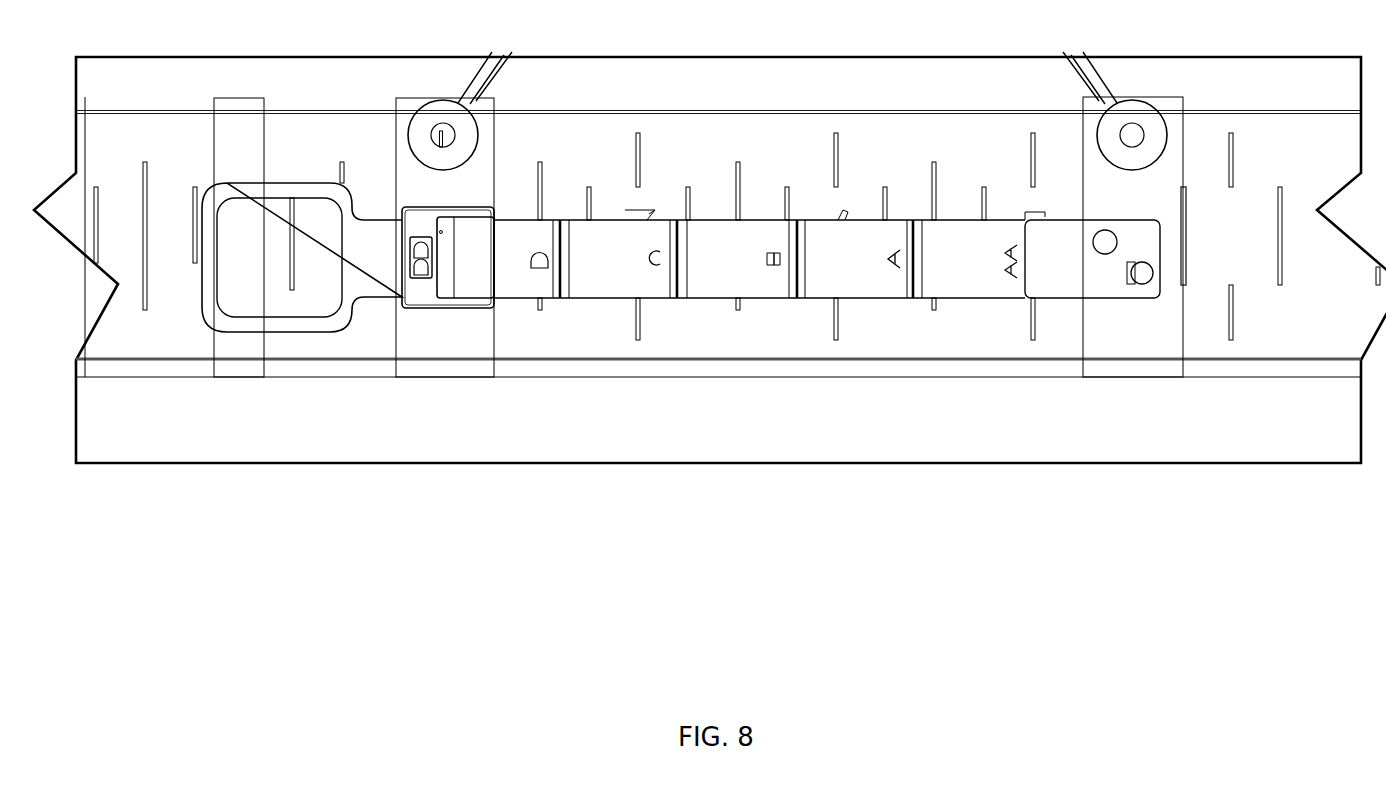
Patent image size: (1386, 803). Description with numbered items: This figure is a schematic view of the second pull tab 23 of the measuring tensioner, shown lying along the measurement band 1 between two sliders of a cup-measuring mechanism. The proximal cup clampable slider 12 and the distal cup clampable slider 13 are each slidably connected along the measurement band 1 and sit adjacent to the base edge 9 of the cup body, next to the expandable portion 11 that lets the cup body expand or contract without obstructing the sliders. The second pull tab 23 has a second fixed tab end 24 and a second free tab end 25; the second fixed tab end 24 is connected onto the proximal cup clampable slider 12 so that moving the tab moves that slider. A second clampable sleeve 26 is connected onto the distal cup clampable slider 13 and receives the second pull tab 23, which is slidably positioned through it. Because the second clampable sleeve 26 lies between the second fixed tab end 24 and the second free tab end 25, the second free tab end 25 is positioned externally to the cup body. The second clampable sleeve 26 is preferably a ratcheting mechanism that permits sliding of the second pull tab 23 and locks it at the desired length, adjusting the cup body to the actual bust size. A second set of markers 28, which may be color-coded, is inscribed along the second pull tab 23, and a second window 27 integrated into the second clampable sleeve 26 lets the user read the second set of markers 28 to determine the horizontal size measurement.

The measurement band 1 is at (827, 343).
The base edge 9 is at (460, 395).
The expandable portion 11 is at (763, 69).
The proximal cup clampable slider 12 is at (1148, 372).
The distal cup clampable slider 13 is at (247, 365).
The second pull tab 23 is at (851, 228).
The second fixed tab end 24 is at (1149, 297).
The second free tab end 25 is at (213, 243).
The second clampable sleeve 26 is at (428, 305).
The second window 27 is at (410, 258).
The second set of markers 28 is at (650, 258).